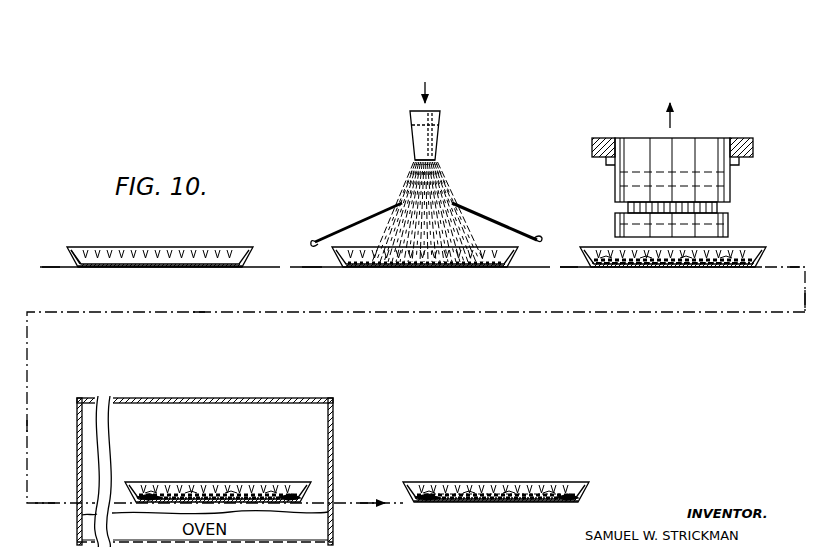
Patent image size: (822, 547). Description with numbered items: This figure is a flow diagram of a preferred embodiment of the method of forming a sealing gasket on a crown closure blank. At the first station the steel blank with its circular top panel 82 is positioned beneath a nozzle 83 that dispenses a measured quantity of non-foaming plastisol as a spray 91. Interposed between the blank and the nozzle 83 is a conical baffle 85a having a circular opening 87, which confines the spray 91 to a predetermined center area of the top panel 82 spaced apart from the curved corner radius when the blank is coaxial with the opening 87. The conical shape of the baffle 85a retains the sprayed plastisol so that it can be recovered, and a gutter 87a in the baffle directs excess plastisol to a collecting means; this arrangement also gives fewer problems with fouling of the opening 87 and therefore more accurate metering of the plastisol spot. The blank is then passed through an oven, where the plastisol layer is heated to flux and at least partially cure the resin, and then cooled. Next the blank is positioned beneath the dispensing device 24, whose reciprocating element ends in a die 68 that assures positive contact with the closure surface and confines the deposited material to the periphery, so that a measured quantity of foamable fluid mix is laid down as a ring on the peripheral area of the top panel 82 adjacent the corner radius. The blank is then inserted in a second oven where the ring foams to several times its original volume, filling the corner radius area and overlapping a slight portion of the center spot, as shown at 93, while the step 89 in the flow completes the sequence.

The dispensing device 24 is at (766, 143).
The die 68 is at (728, 236).
The top panel 82 is at (130, 269).
The nozzle 83 is at (440, 130).
The spray of plastisol 91 is at (436, 155).
The circular opening 87 is at (402, 205).
The gutter 87a is at (316, 239).
The conical baffle 85a is at (520, 230).
The pressed layer 89 is at (600, 268).
The overlap of ring on center spot 93 is at (440, 502).